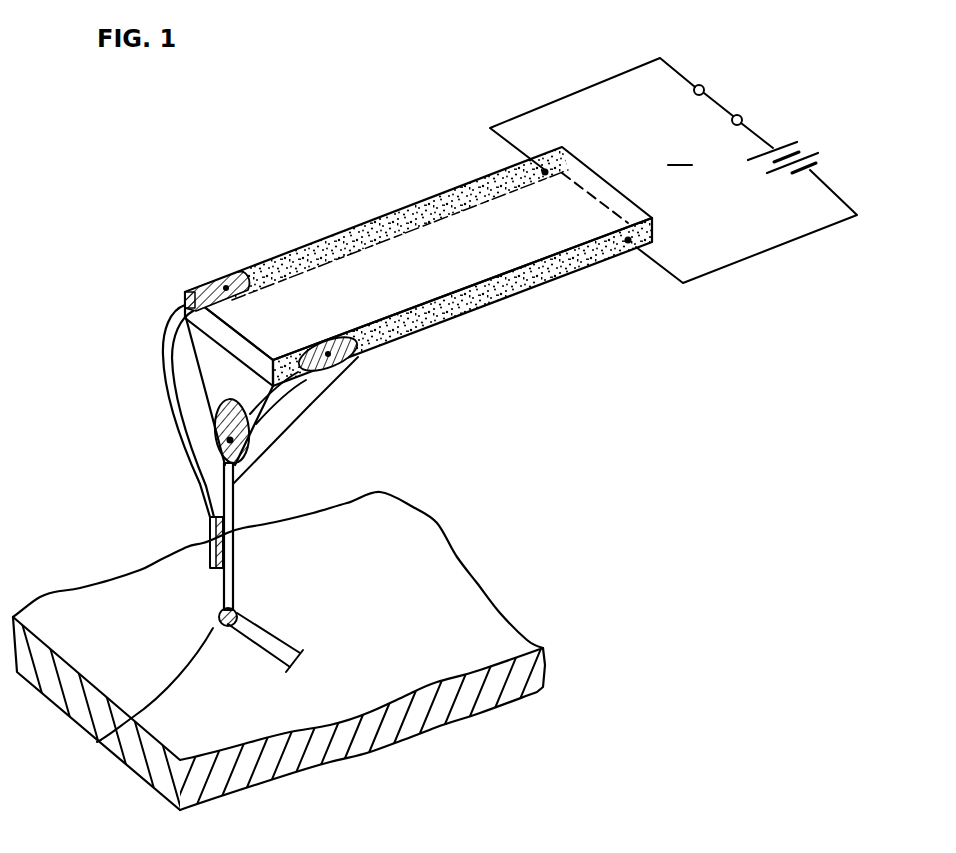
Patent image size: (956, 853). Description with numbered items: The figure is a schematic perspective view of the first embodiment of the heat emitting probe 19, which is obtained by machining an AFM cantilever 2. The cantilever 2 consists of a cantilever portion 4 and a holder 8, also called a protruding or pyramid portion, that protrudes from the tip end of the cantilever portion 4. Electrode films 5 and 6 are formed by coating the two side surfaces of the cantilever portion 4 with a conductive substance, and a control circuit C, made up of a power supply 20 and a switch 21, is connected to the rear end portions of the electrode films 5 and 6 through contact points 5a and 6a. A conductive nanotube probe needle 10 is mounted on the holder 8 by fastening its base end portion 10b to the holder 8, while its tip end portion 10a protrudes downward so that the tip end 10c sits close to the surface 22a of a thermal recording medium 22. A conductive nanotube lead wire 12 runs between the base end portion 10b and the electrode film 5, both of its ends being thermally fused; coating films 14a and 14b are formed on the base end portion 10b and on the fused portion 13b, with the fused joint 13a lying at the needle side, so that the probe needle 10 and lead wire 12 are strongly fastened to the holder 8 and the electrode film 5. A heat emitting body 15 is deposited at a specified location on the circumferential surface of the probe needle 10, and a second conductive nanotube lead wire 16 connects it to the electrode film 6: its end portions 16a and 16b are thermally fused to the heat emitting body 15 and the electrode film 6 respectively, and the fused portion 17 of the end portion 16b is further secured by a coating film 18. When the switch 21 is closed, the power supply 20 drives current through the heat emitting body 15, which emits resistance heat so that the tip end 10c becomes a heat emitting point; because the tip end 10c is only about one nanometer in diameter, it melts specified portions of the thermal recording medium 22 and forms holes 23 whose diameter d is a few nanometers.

The AFM cantilever 2 is at (357, 215).
The cantilever portion 4 is at (482, 252).
The electrode film 5 is at (562, 266).
The contact point 5a is at (628, 244).
The electrode film 6 is at (437, 197).
The contact point 6a is at (540, 170).
The holder 8 is at (291, 405).
The conductive nanotube probe needle 10 is at (236, 504).
The tip end portion 10a is at (234, 583).
The base end portion 10b is at (266, 458).
The tip end 10c is at (237, 611).
The conductive nanotube lead wire 12 is at (290, 387).
The electrode pad 13a is at (223, 450).
The fused portion 13b is at (358, 352).
The coating film 14a is at (216, 428).
The coating film 14b is at (358, 364).
The heat emitting body 15 is at (209, 537).
The conductive nanotube lead wire 16 is at (164, 384).
The end portion 16a is at (215, 560).
The end portion 16b is at (186, 294).
The fused portion 17 is at (214, 282).
The coating film 18 is at (237, 276).
The heat emitting probe 19 is at (360, 164).
The power supply 20 is at (799, 140).
The switch 21 is at (728, 105).
The thermal recording medium 22 is at (390, 723).
The sample surface 22a is at (455, 605).
The holes 23 is at (133, 717).